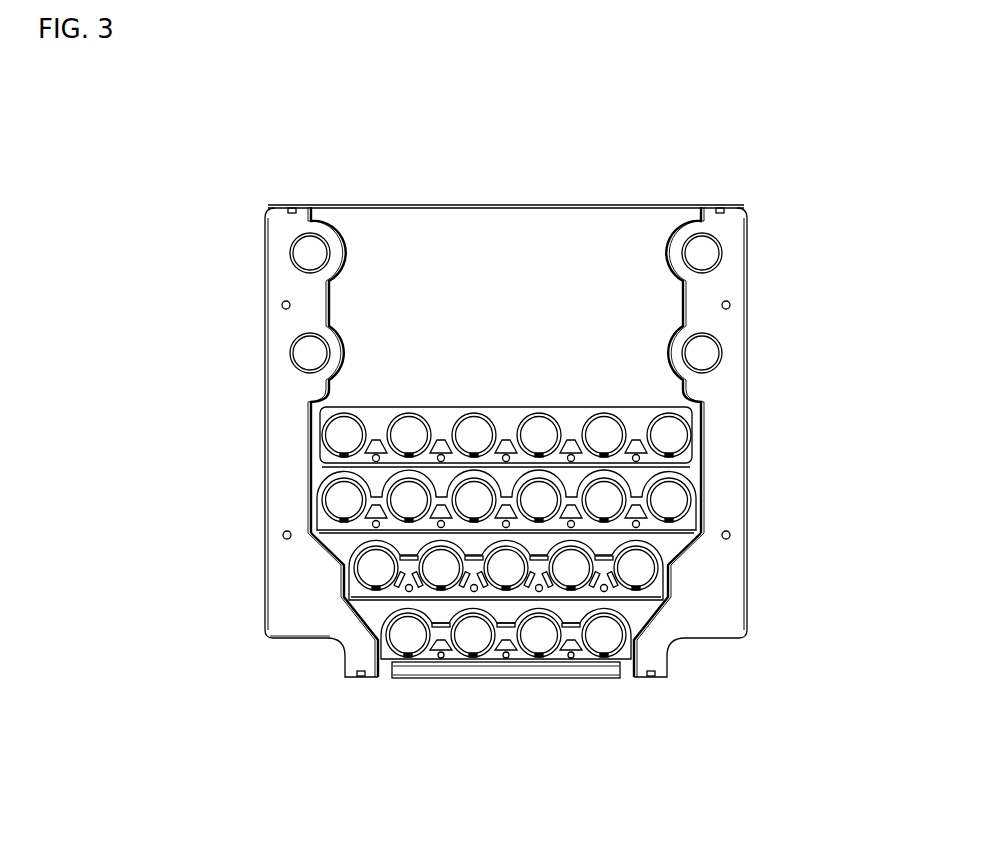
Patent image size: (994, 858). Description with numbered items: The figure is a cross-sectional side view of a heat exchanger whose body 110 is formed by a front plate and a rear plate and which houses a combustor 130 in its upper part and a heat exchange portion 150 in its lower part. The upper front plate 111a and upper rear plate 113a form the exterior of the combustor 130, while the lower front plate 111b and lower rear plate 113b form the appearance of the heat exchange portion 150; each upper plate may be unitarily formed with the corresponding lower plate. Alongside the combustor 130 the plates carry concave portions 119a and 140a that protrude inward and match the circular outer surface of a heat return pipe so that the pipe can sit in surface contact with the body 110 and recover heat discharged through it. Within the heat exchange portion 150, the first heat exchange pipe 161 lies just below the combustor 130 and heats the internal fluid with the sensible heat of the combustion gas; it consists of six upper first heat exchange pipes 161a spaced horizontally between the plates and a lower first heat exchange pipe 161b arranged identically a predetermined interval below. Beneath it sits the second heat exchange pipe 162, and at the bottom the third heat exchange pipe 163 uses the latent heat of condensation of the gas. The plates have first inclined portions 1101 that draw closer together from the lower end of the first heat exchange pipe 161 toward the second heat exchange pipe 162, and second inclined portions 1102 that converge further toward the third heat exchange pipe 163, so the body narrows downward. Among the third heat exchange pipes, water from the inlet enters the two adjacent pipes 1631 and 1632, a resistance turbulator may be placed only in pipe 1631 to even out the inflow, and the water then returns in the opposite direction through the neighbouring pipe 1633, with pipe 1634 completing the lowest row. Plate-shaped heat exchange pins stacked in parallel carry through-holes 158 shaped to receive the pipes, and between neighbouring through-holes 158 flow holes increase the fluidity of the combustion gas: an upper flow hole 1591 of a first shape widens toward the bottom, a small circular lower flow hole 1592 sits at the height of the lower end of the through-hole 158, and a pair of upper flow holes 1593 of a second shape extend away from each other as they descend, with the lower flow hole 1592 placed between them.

The combustor 130 is at (518, 224).
The body 110 is at (267, 452).
The upper front plate 111a is at (700, 290).
The lower front plate 111b is at (670, 582).
The upper rear plate 113a is at (281, 305).
The lower rear plate 113b is at (340, 597).
The lower opening 119a is at (326, 354).
The upper opening 140a is at (289, 258).
The first inclined portion 1101 is at (322, 553).
The second inclined portion 1102 is at (330, 640).
The heat exchange portion 150 is at (502, 580).
The through-hole 158 is at (680, 463).
The upper flow hole 1591 is at (653, 443).
The lower flow hole 1592 is at (675, 503).
The upper flow hole having a second shape 1593 is at (620, 585).
The first heat exchange pipe 161 is at (502, 470).
The upper first heat exchange pipe 161a is at (503, 470).
The lower first heat exchange pipe 161b is at (501, 501).
The second heat exchange pipe 162 is at (451, 628).
The third heat exchange pipe 163 is at (478, 686).
The third heat exchange pipe 1631 is at (407, 658).
The third heat exchange pipe 1632 is at (478, 660).
The third heat exchange pipe 1633 is at (543, 660).
The fourth cell receiving hole 1634 is at (602, 659).